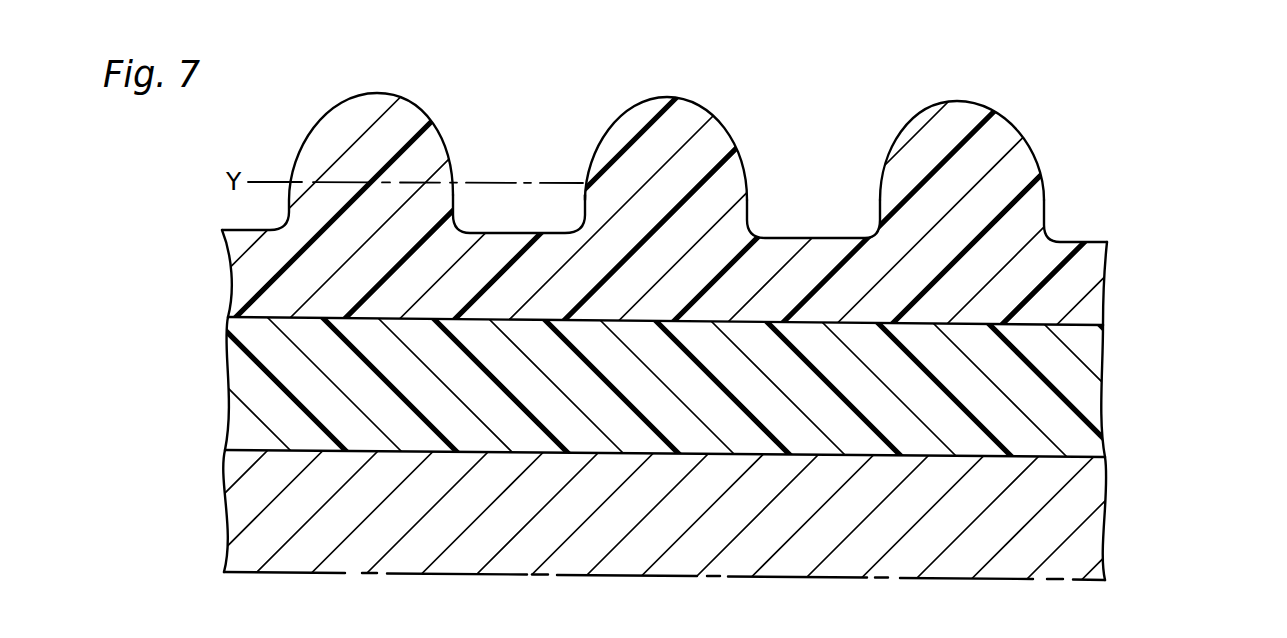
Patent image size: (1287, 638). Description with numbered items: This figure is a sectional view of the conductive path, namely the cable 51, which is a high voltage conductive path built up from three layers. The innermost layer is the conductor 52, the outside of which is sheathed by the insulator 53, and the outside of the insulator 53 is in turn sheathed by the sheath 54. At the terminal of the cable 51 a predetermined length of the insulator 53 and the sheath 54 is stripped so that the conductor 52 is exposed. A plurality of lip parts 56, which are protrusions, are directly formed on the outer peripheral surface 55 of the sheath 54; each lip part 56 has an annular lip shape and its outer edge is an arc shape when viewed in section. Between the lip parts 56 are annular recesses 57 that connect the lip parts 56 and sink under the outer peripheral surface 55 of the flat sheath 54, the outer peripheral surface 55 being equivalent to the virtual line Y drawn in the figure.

The cable 51 is at (705, 311).
The conductor 52 is at (1057, 518).
The insulator 53 is at (1055, 405).
The sheath 54 is at (724, 183).
The outer peripheral surface 55 is at (516, 232).
The lip part 56 is at (960, 101).
The annular recess 57 is at (803, 237).